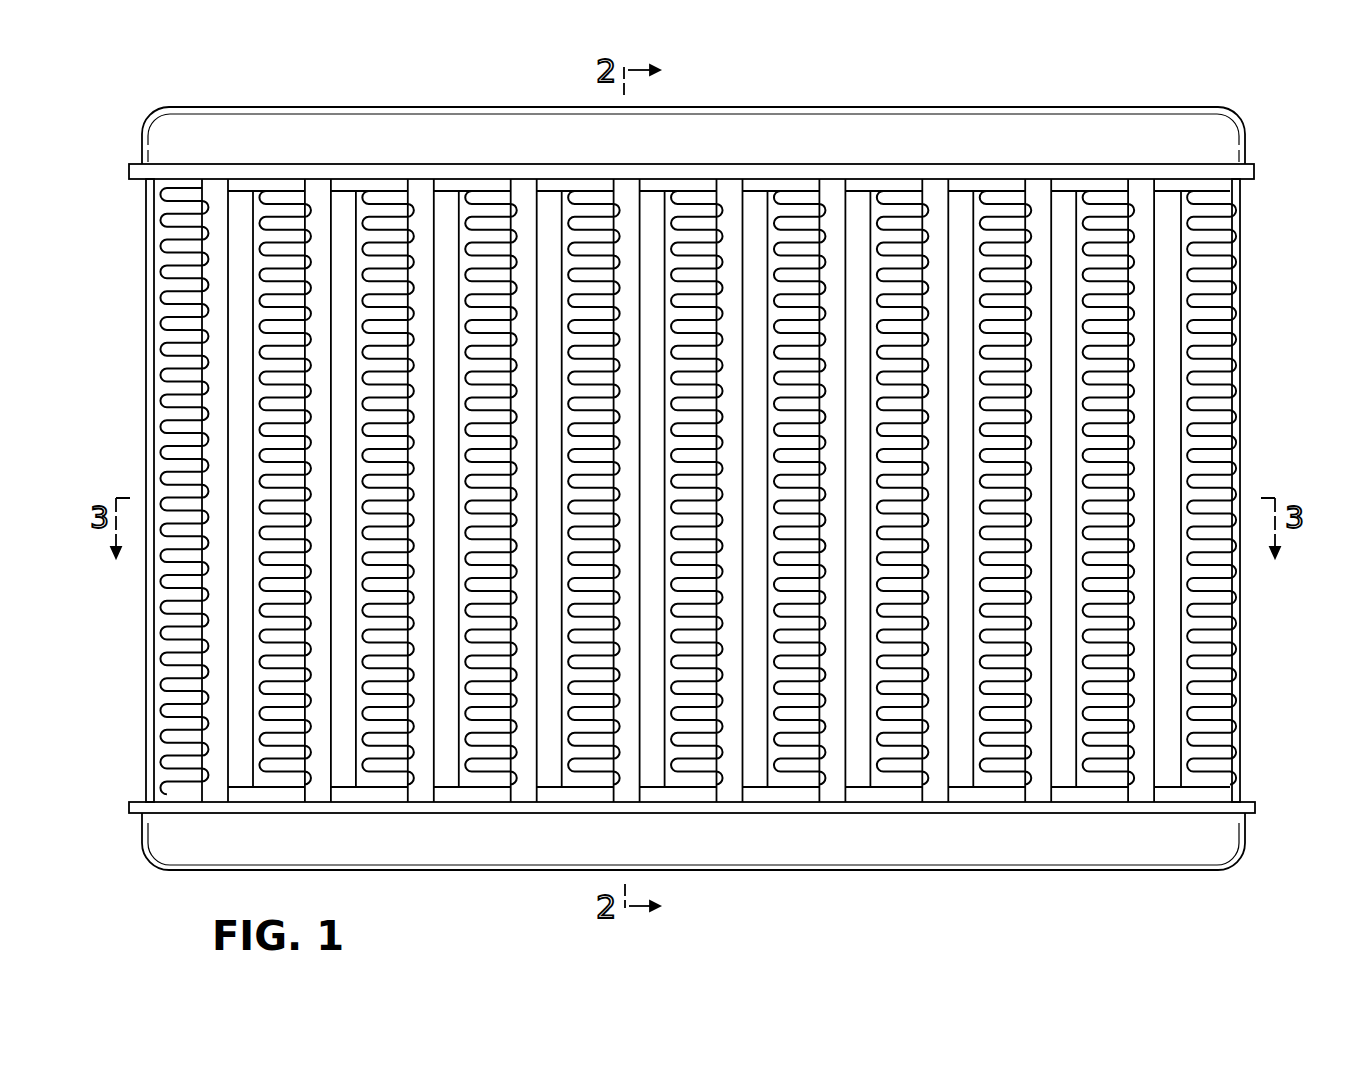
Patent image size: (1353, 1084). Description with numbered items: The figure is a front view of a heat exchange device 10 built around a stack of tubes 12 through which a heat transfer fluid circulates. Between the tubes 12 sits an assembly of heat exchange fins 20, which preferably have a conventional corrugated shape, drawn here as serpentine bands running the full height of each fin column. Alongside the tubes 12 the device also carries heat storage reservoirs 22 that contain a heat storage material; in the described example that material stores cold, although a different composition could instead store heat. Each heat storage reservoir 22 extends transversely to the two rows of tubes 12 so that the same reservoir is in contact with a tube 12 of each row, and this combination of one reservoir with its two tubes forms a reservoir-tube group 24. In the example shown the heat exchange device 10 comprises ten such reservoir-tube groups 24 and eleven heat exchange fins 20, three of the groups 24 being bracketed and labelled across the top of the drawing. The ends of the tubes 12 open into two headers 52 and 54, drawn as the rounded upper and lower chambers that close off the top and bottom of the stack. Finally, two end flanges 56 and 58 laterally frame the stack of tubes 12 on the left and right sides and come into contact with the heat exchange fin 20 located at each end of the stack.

The heat exchange device 10 is at (118, 131).
The tube 12 is at (728, 787).
The heat exchange fin 20 is at (795, 781).
The heat storage reservoir 22 is at (757, 773).
The reservoir-tube group 24 is at (818, 158).
The header 52 is at (1233, 103).
The header 54 is at (1205, 878).
The end flange 56 is at (145, 702).
The end flange 58 is at (1240, 615).